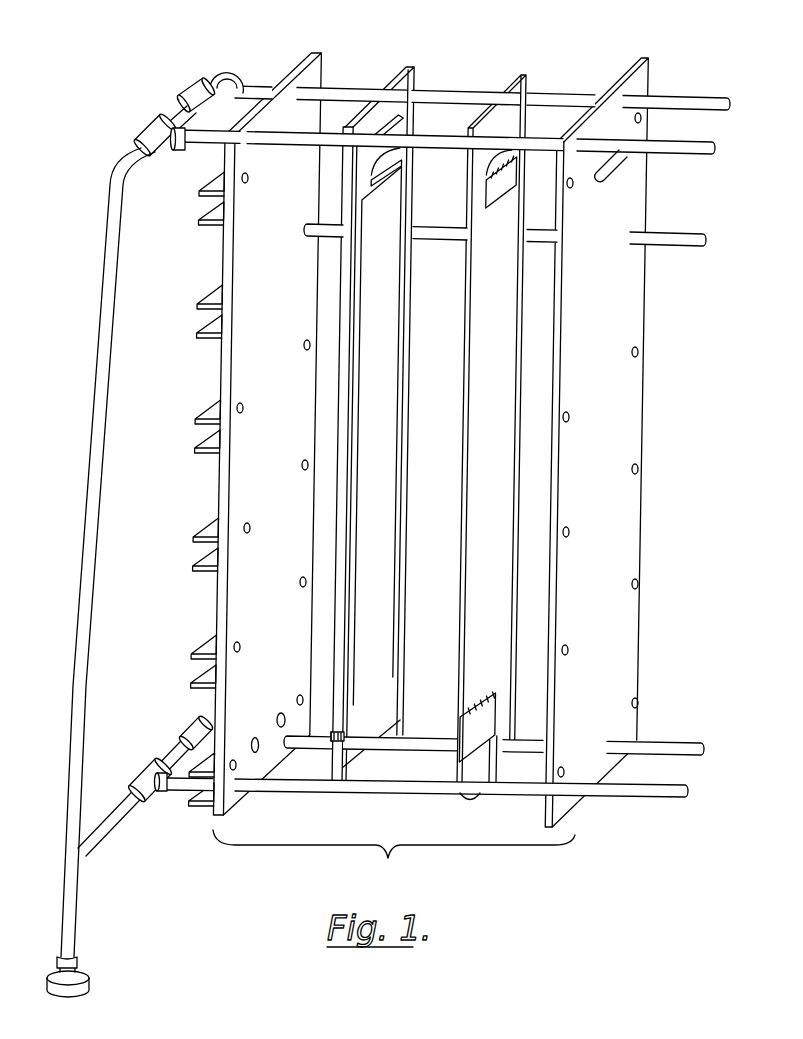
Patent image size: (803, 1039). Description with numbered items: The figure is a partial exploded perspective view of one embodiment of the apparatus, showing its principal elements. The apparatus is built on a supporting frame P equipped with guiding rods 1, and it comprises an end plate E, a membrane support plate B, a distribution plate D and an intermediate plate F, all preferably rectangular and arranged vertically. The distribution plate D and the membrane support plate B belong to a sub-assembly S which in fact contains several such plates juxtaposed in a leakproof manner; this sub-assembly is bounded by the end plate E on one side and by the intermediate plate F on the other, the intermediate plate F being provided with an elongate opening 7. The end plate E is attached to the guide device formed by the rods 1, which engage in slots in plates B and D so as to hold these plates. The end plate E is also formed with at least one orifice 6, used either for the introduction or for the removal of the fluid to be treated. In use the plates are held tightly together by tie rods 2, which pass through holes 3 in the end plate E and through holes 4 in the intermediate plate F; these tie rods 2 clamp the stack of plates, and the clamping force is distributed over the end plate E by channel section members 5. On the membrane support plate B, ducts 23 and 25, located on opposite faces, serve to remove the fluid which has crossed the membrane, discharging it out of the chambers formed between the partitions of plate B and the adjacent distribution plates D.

The guiding rods 1 is at (649, 792).
The tie rods 2 is at (597, 297).
The holes 3 is at (241, 413).
The holes 4 is at (637, 474).
The channel section members 5 is at (130, 572).
The orifice 6 is at (279, 712).
The elongate opening 7 is at (605, 178).
The duct 23 is at (343, 741).
The duct 25 is at (333, 741).
The end plate E is at (307, 55).
The membrane support plate B is at (407, 67).
The distribution plate D is at (525, 73).
The intermediate plate F is at (648, 60).
The supporting frame P is at (177, 108).
The sub-assembly S is at (394, 860).